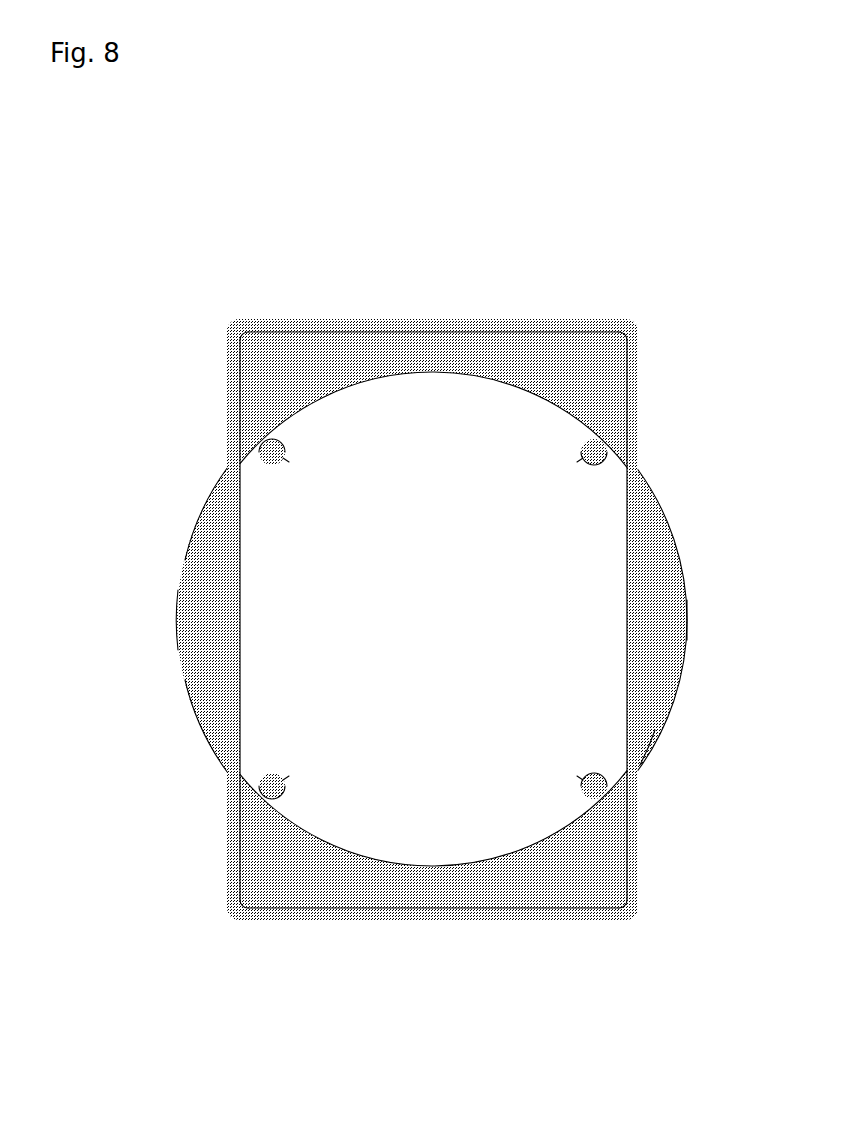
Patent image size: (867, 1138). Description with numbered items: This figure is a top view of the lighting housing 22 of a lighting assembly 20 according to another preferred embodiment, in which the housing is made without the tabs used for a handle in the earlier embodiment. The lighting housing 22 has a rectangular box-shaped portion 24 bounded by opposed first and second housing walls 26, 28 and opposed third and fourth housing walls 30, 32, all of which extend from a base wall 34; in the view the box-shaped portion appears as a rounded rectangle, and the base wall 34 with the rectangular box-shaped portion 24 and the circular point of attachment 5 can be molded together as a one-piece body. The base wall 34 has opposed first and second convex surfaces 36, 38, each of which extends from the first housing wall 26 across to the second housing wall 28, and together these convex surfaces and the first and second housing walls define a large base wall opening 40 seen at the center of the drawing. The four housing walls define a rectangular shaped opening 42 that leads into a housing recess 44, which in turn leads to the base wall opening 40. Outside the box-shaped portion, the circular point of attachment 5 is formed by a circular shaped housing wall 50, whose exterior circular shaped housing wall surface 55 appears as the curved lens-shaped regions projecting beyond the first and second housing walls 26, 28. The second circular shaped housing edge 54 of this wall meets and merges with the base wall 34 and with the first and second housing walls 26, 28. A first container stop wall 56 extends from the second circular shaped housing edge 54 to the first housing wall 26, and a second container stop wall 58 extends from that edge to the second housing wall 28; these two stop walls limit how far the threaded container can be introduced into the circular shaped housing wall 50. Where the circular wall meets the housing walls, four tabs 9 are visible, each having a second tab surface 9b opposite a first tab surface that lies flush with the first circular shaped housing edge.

The lighting assembly 20 is at (460, 320).
The lighting housing 22 is at (585, 327).
The rectangular box-shaped portion 24 is at (639, 807).
The first housing wall 26 is at (226, 360).
The second housing wall 28 is at (639, 376).
The third housing wall 30 is at (293, 921).
The fourth housing wall 32 is at (330, 320).
The base wall 34 is at (262, 350).
The first convex surface 36 is at (432, 375).
The second convex surface 38 is at (434, 864).
The base wall opening 40 is at (405, 398).
The rectangular shaped opening 42 is at (508, 352).
The housing recess 44 is at (290, 350).
The tabs 9 is at (285, 450).
The second tab surface 9b is at (286, 460).
The circular point of attachment 5 is at (656, 540).
The circular shaped housing wall 50 is at (689, 603).
The second circular shaped housing edge 54 is at (178, 548).
The exterior circular shaped housing wall surface 55 is at (172, 622).
The first container stop wall 56 is at (202, 676).
The second container stop wall 58 is at (676, 722).